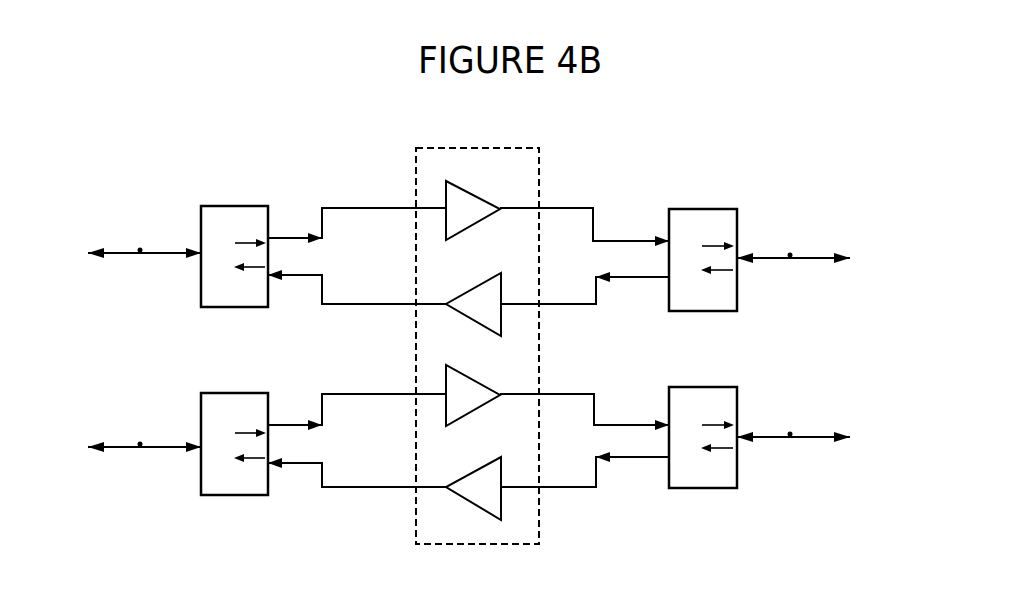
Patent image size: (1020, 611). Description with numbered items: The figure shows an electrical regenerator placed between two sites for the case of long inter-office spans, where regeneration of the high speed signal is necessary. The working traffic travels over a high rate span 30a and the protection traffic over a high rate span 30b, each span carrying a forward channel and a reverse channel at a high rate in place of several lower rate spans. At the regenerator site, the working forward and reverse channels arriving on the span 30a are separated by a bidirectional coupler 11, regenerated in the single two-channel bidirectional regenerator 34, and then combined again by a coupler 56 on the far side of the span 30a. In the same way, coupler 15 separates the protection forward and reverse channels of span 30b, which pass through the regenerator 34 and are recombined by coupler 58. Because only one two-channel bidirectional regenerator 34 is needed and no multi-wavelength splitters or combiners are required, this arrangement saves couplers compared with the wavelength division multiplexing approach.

The bidirectional coupler 11 is at (224, 307).
The coupler 15 is at (226, 495).
The high rate span 30a is at (128, 252).
The high rate span 30b is at (128, 447).
The 2-channel bidirectional regenerator 34 is at (540, 168).
The third wavelength coupler (working fiber, east) 56 is at (688, 209).
The fourth wavelength coupler (protection fiber, east) 58 is at (698, 488).